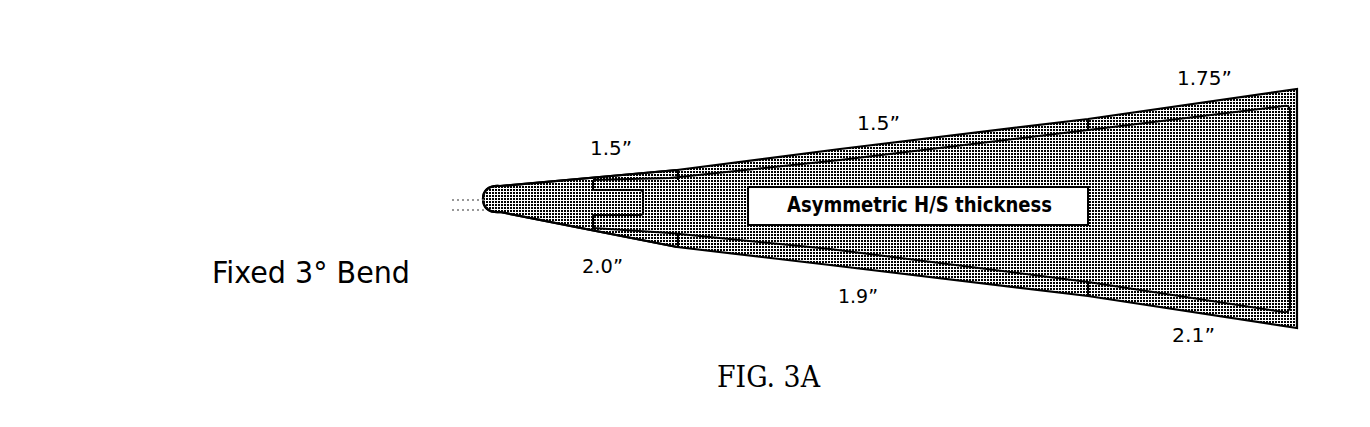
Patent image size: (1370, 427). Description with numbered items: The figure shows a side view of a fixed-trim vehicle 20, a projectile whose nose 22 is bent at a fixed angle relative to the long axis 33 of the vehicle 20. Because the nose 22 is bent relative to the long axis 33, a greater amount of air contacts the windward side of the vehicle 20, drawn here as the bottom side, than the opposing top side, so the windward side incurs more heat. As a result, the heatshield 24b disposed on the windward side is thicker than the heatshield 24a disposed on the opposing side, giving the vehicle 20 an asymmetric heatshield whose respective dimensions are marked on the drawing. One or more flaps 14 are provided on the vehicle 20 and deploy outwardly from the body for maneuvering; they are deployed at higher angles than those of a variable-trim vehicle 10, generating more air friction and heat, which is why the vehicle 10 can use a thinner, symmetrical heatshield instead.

The vehicle 20 is at (990, 68).
The nose 22 is at (512, 182).
The heatshield 24a is at (758, 158).
The heatshield 24b is at (740, 249).
The flaps 14 is at (1243, 149).
The long axis 33 is at (455, 209).
The vehicle 10 is at (980, 426).